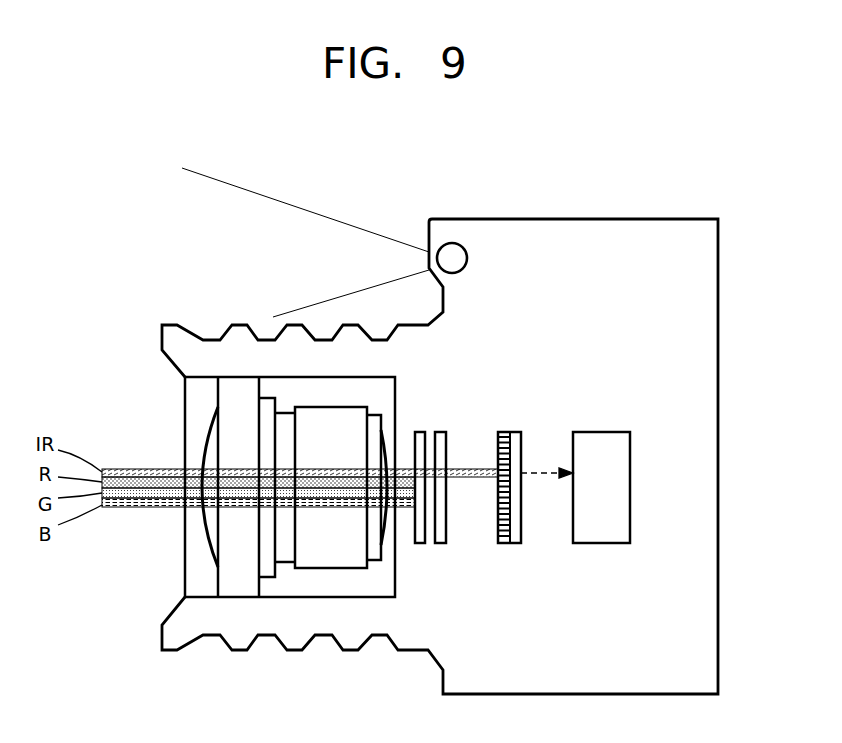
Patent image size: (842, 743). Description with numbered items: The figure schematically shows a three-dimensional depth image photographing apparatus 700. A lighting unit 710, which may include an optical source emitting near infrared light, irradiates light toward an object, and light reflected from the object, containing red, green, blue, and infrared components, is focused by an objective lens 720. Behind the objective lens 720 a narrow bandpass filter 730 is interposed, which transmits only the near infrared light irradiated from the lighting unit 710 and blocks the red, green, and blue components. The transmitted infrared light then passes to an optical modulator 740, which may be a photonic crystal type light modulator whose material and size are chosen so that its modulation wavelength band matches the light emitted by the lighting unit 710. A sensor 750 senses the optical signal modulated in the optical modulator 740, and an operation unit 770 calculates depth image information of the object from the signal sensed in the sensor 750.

The 3D depth image photographing apparatus 700 is at (736, 197).
The lighting unit 710 is at (452, 242).
The objective lens 720 is at (208, 533).
The narrow bandpass filter 730 is at (420, 430).
The optical modulator 740 is at (440, 546).
The sensor 750 is at (510, 430).
The operation unit 770 is at (602, 430).